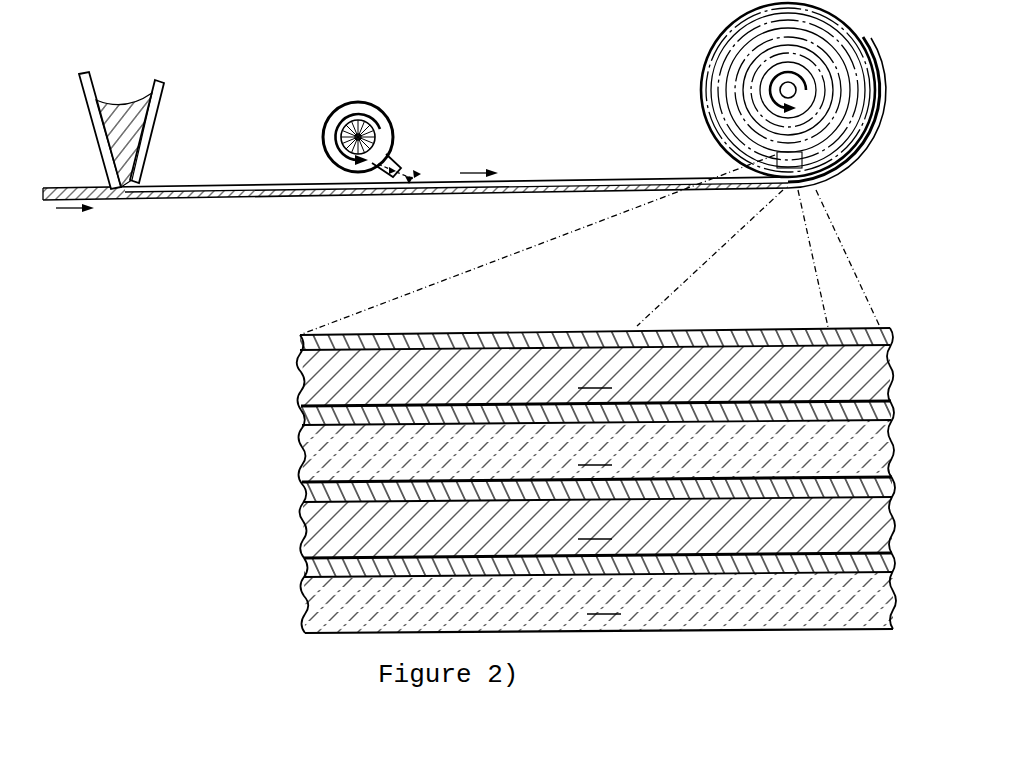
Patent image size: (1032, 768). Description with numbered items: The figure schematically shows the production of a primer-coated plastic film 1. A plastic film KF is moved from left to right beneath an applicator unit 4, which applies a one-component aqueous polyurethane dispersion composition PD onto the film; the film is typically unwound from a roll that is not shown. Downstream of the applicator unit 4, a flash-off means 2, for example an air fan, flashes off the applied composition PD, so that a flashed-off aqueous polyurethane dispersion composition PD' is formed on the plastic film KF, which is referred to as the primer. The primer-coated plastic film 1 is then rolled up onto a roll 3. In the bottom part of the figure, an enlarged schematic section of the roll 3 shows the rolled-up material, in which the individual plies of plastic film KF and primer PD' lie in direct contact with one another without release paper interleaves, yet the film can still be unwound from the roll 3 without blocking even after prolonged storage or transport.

The primer-coated plastic film 1 is at (648, 163).
The flash-off means 2 is at (380, 121).
The roll 3 is at (728, 72).
The applicator unit 4 is at (92, 130).
The one-component aqueous polyurethane dispersion composition PD is at (145, 110).
The flashed-off aqueous polyurethane dispersion composition PD' is at (536, 305).
The plastic film KF is at (187, 200).